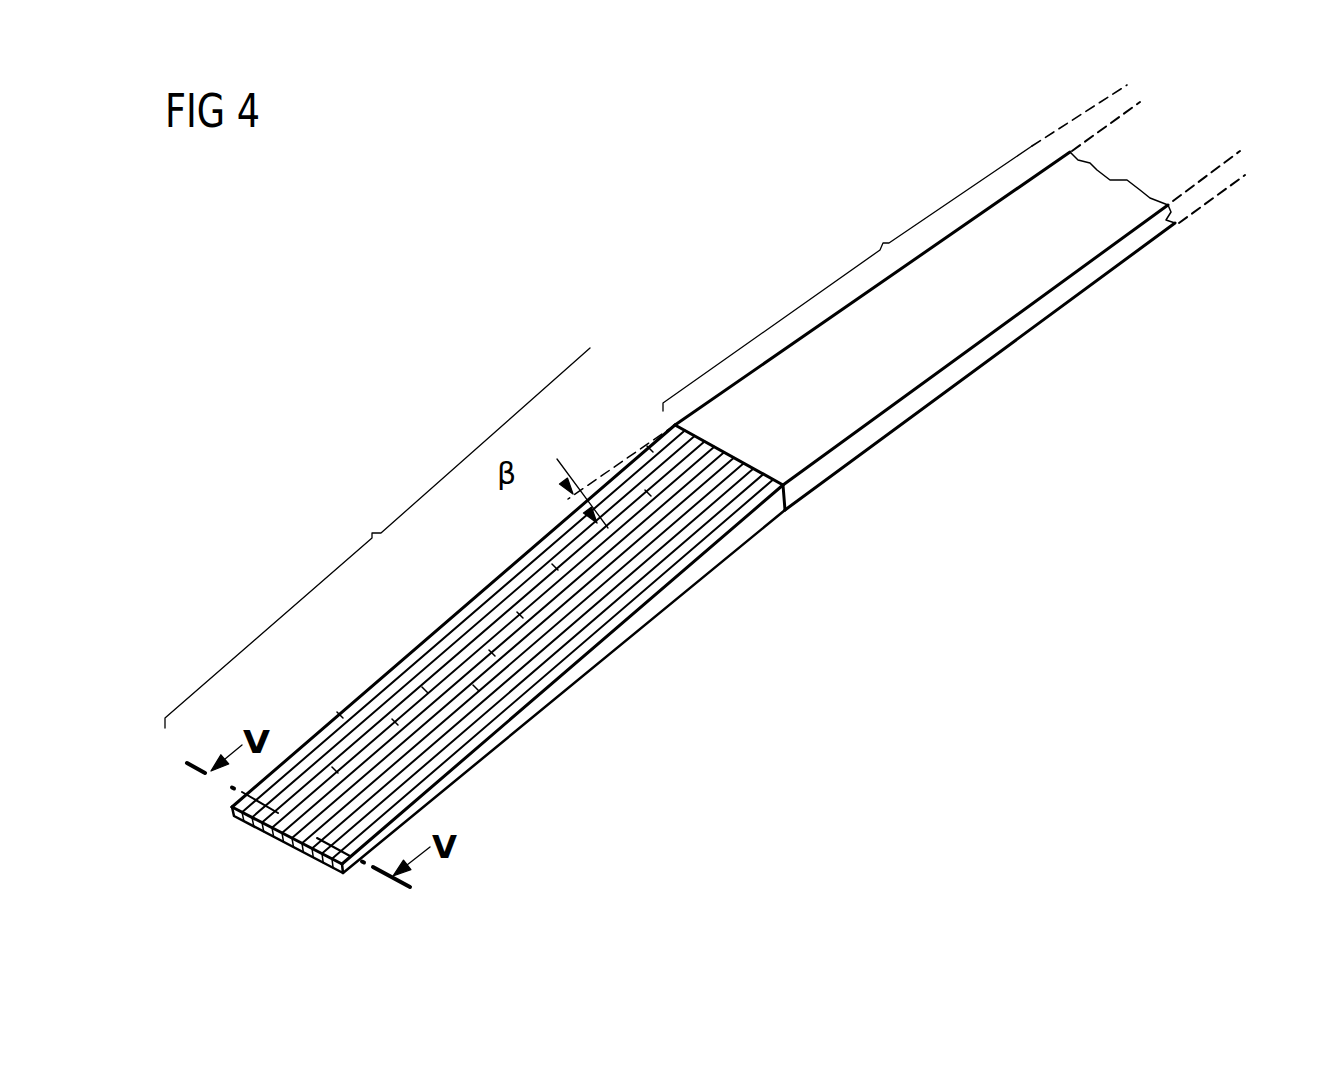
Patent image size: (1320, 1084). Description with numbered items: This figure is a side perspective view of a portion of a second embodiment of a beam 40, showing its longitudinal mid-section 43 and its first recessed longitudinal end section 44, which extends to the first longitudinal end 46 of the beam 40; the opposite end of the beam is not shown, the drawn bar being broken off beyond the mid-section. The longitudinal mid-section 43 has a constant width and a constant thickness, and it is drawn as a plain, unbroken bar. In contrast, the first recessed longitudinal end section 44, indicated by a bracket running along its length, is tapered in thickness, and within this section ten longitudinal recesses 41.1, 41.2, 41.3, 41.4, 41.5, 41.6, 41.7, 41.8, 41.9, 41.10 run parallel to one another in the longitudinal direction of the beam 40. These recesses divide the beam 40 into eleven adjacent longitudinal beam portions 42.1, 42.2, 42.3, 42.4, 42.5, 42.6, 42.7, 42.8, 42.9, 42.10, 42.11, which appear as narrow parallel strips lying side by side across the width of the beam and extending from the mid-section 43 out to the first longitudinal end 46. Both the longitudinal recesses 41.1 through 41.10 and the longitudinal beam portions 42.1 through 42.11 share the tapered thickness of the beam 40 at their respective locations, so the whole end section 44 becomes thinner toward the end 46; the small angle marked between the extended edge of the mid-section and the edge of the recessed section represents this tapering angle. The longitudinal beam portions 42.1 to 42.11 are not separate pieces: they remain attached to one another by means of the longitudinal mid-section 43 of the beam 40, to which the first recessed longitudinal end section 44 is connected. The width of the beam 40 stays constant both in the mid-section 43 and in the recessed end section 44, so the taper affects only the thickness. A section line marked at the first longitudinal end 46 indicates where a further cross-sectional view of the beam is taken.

The beam 40 is at (1011, 298).
The longitudinal mid-section 43 is at (894, 231).
The first recessed longitudinal end section 44 is at (373, 526).
The first longitudinal end 46 is at (276, 847).
The longitudinal recess 41.1 is at (650, 449).
The longitudinal recess 41.2 is at (648, 494).
The longitudinal recess 41.3 is at (555, 567).
The longitudinal recess 41.4 is at (520, 615).
The longitudinal recess 41.5 is at (492, 653).
The longitudinal recess 41.6 is at (476, 688).
The longitudinal recess 41.7 is at (425, 690).
The longitudinal recess 41.8 is at (395, 722).
The longitudinal recess 41.9 is at (340, 715).
The longitudinal recess 41.10 is at (335, 770).
The longitudinal beam portion 42.1 is at (665, 438).
The longitudinal beam portion 42.2 is at (641, 474).
The longitudinal beam portion 42.3 is at (616, 510).
The longitudinal beam portion 42.4 is at (592, 546).
The longitudinal beam portion 42.5 is at (568, 582).
The longitudinal beam portion 42.6 is at (544, 618).
The longitudinal beam portion 42.7 is at (519, 653).
The longitudinal beam portion 42.8 is at (495, 689).
The longitudinal beam portion 42.9 is at (471, 725).
The longitudinal beam portion 42.10 is at (446, 761).
The longitudinal beam portion 42.11 is at (422, 797).